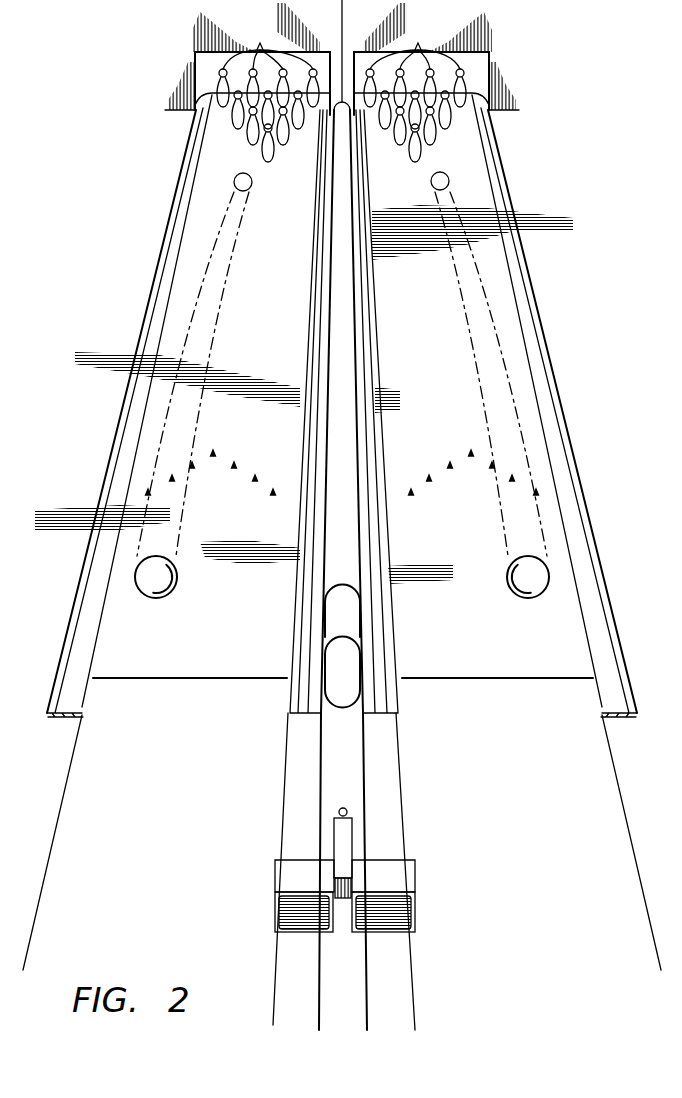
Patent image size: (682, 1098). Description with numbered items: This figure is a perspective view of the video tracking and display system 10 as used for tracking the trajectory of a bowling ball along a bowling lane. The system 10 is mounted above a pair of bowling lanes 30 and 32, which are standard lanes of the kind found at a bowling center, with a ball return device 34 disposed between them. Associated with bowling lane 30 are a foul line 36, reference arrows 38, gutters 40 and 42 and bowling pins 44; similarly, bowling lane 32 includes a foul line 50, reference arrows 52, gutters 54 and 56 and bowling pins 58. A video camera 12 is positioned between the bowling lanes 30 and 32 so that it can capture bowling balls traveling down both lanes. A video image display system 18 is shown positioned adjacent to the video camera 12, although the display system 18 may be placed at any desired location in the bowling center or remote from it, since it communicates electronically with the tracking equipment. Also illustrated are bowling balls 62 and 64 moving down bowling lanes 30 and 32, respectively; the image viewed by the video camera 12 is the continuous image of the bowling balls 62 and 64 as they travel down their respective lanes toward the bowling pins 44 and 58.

The video tracking and display system 10 is at (440, 821).
The video camera 12 is at (352, 830).
The video image display system 18 is at (277, 876).
The bowling lane 30 is at (186, 743).
The bowling lane 32 is at (516, 743).
The ball return device 34 is at (345, 708).
The foul line 36 is at (137, 683).
The reference arrows 38 is at (236, 462).
The gutter 40 is at (160, 272).
The gutter 42 is at (308, 301).
The bowling pins 44 is at (268, 89).
The foul line 50 is at (540, 681).
The reference arrows 52 is at (448, 462).
The gutter 54 is at (374, 301).
The gutter 56 is at (527, 277).
The bowling pins 58 is at (415, 89).
The bowling ball 62 is at (253, 183).
The bowling ball 64 is at (430, 182).